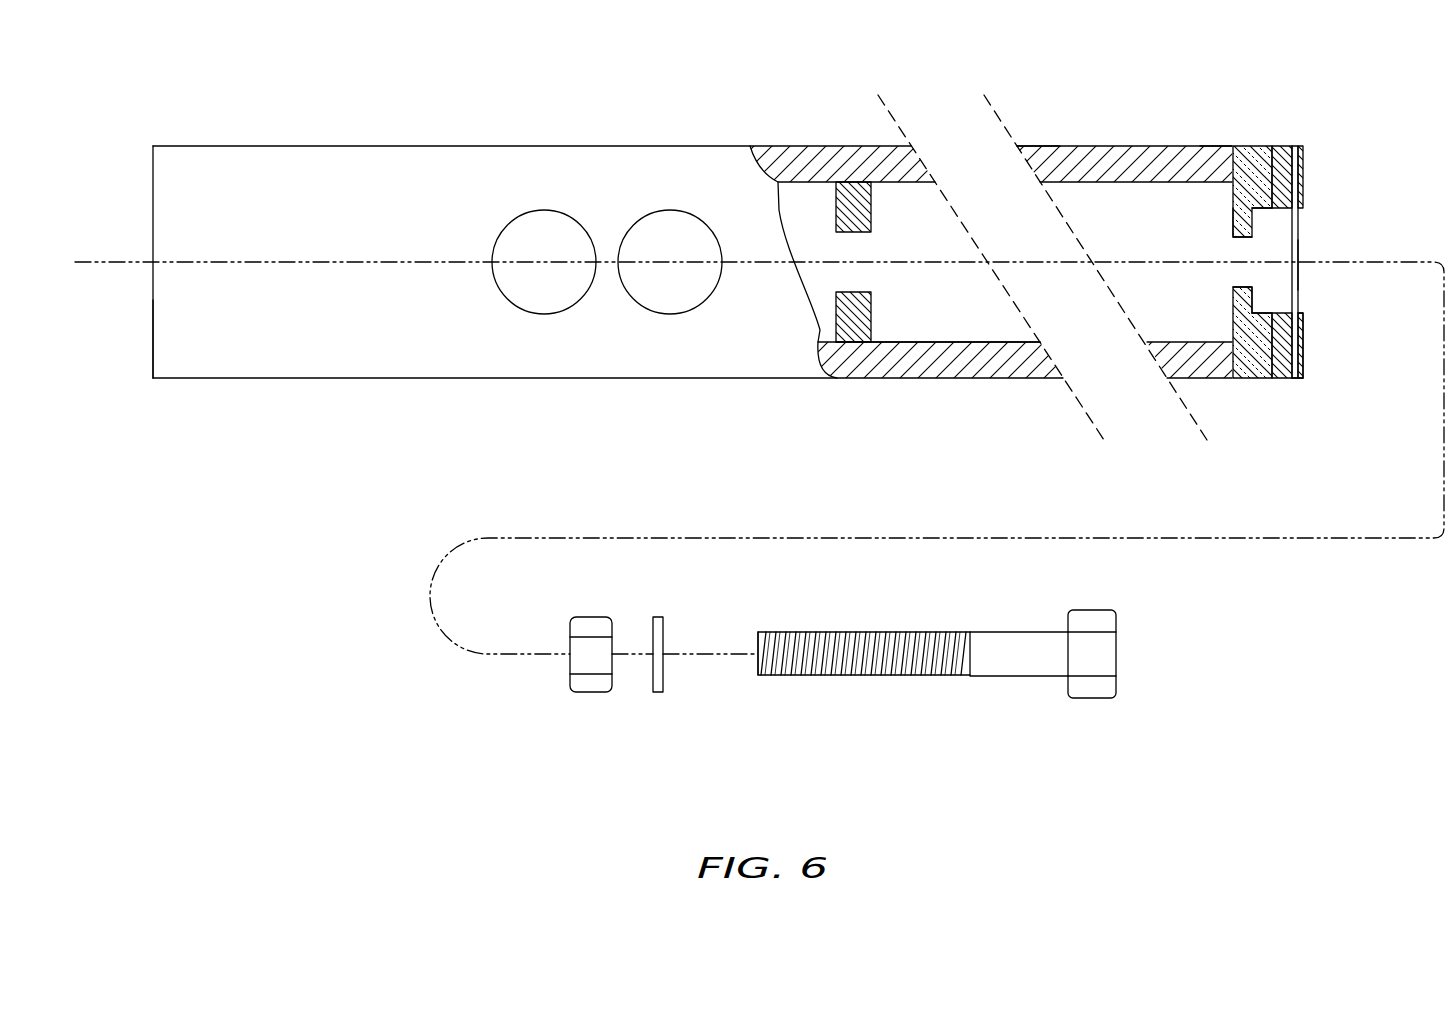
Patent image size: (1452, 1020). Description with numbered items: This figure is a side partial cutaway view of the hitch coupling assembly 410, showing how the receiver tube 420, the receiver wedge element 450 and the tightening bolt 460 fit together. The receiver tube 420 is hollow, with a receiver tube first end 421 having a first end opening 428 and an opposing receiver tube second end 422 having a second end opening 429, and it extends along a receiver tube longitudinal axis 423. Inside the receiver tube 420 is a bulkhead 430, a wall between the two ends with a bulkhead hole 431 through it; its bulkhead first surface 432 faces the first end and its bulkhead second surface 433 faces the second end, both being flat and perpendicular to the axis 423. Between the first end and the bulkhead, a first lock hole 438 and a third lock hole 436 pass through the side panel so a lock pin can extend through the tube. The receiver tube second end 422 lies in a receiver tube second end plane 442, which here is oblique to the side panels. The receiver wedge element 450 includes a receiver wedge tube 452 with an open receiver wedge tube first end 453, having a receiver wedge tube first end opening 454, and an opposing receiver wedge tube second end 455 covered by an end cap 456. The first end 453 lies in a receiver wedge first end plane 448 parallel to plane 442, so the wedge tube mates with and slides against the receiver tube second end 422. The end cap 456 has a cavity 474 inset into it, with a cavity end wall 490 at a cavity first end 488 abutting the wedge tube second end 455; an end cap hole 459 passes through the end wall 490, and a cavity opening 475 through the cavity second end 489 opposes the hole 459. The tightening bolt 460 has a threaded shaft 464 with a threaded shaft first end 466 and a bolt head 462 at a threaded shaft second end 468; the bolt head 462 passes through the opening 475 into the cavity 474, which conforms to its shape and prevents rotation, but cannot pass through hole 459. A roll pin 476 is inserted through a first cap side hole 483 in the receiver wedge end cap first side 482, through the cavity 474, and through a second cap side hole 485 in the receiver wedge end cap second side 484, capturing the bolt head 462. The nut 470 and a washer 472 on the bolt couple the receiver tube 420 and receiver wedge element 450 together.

The hitch coupling assembly 410 is at (301, 83).
The receiver tube 420 is at (447, 150).
The receiver tube first end 421 is at (172, 378).
The receiver tube second end 422 is at (1000, 378).
The receiver tube longitudinal axis 423 is at (101, 263).
The first end opening 428 is at (140, 323).
The second end opening 429 is at (995, 300).
The bulkhead 430 is at (847, 207).
The bulkhead hole 431 is at (880, 285).
The bulkhead first surface 432 is at (837, 317).
The bulkhead second surface 433 is at (850, 208).
The third lock hole 436 is at (543, 227).
The first lock hole 438 is at (668, 223).
The receiver tube second end plane 442 is at (991, 252).
The receiver wedge first end plane 448 is at (1095, 250).
The receiver wedge element 450 is at (1149, 113).
The receiver wedge tube 452 is at (1092, 147).
The receiver wedge tube first end 453 is at (1040, 170).
The receiver wedge tube first end opening 454 is at (1138, 310).
The receiver wedge tube second end 455 is at (1225, 158).
The end cap 456 is at (1278, 145).
The end cap hole 459 is at (1219, 242).
The cavity 474 is at (1250, 278).
The cavity opening 475 is at (1345, 277).
The roll pin 476 is at (1292, 232).
The receiver wedge end cap first side 482 is at (1260, 145).
The first cap side hole 483 is at (1293, 145).
The receiver wedge end cap second side 484 is at (1257, 378).
The second cap side hole 485 is at (1292, 375).
The cavity first end 488 is at (1253, 222).
The cavity second end 489 is at (1298, 313).
The cavity end wall 490 is at (1240, 317).
The tightening bolt 460 is at (1005, 720).
The bolt head 462 is at (1091, 615).
The threaded shaft 464 is at (863, 677).
The threaded shaft first end 466 is at (757, 638).
The threaded shaft second end 468 is at (1062, 647).
The nut 470 is at (592, 692).
The washer 472 is at (658, 692).